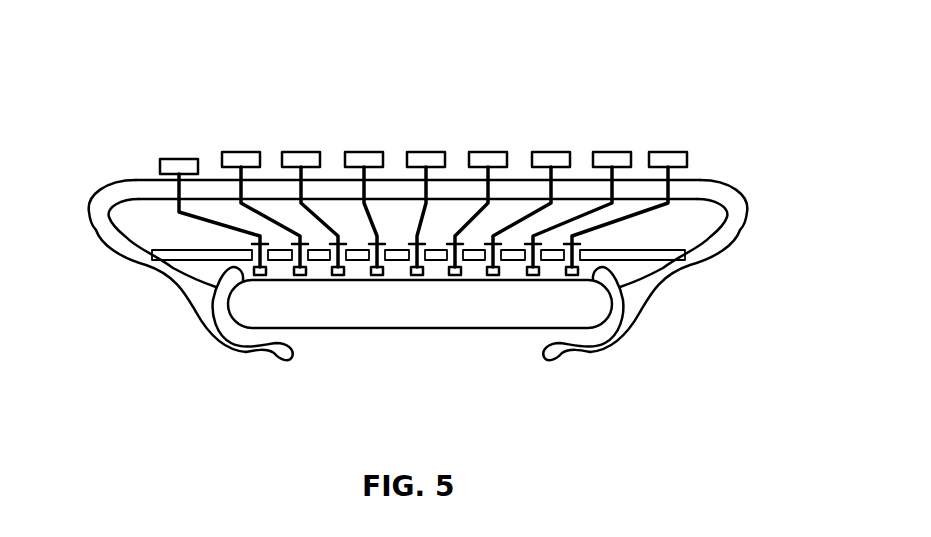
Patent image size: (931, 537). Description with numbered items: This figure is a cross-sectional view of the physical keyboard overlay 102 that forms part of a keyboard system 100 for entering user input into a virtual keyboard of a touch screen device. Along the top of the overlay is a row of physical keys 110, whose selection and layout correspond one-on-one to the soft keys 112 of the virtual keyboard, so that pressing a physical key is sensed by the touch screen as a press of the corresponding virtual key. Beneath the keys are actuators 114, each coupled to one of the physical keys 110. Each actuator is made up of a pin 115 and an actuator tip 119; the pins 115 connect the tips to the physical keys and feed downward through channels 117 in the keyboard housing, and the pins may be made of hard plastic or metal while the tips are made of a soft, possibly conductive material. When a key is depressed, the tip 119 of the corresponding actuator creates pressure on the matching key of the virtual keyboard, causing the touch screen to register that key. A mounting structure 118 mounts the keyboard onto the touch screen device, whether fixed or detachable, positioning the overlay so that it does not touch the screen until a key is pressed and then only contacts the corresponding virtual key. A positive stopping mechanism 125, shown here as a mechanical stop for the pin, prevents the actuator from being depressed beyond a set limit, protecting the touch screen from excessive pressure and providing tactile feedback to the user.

The keyboard system 100 is at (659, 70).
The physical keyboard overlay 102 is at (710, 180).
The physical keys 110 is at (437, 151).
The soft keys 112 is at (385, 279).
The actuators 114 is at (174, 207).
The pins 115 is at (206, 222).
The channels 117 is at (222, 283).
The mounting structure 118 is at (623, 315).
The actuator tips 119 is at (340, 277).
The positive stopping mechanism 125 is at (582, 239).